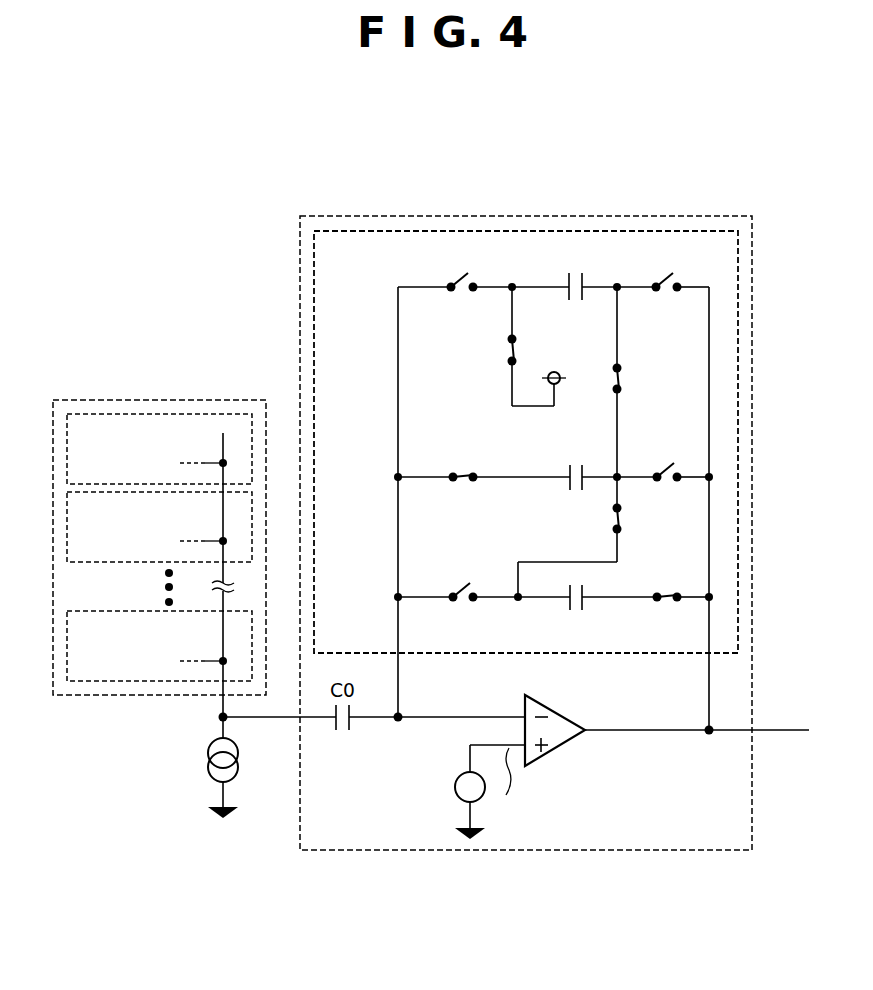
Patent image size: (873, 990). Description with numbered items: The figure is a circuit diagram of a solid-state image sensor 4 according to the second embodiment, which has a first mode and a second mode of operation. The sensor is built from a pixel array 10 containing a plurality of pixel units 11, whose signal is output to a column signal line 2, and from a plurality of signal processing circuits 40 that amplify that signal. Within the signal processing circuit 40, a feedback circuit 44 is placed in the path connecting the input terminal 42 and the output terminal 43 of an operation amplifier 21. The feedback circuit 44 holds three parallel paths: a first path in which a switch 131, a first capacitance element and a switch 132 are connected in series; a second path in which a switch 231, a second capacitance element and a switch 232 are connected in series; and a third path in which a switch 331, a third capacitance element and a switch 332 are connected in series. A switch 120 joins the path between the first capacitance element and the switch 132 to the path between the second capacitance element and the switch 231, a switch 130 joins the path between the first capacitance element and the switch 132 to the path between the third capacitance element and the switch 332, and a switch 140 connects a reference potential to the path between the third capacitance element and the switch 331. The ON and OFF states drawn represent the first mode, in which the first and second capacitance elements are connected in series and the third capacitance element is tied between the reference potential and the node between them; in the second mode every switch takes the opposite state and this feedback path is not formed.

The solid-state image sensor 4 is at (742, 193).
The pixel array 10 is at (108, 400).
The pixel unit 11 is at (235, 487).
The column signal line 2 is at (218, 717).
The operation amplifier 21 is at (560, 705).
The signal processing circuit 40 is at (755, 420).
The input terminal 42 is at (422, 720).
The output terminal 43 is at (667, 733).
The feedback circuit 44 is at (740, 495).
The switch 120 is at (612, 520).
The switch 130 is at (622, 380).
The switch 131 is at (460, 472).
The switch 132 is at (662, 472).
The switch 140 is at (508, 352).
The switch 231 is at (466, 587).
The switch 232 is at (669, 603).
The switch 331 is at (462, 280).
The switch 332 is at (667, 280).